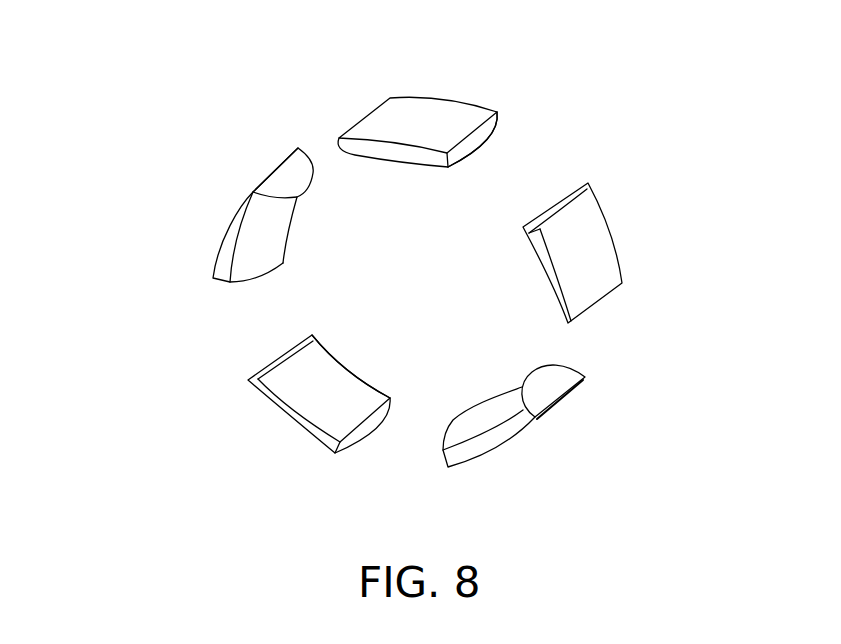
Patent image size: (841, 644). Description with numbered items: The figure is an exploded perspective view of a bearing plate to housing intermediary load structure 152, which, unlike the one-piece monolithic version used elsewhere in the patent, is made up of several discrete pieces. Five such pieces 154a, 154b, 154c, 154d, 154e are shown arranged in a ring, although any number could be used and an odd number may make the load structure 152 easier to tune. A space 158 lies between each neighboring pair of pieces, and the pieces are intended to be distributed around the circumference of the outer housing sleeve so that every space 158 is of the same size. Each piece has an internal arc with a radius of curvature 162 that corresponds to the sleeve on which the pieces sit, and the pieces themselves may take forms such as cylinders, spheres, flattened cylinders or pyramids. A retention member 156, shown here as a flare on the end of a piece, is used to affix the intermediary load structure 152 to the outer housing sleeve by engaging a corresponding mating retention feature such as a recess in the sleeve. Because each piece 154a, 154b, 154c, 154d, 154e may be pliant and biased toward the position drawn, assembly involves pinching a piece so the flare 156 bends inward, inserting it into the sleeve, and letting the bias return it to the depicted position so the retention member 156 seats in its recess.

The bearing plate to housing intermediary load structure 152 is at (513, 110).
The piece 154a is at (427, 117).
The piece 154b is at (227, 223).
The piece 154c is at (588, 242).
The piece 154d is at (287, 425).
The piece 154e is at (560, 410).
The retention member 156 is at (483, 145).
The space 158 is at (320, 150).
The radius of curvature 162 is at (350, 368).